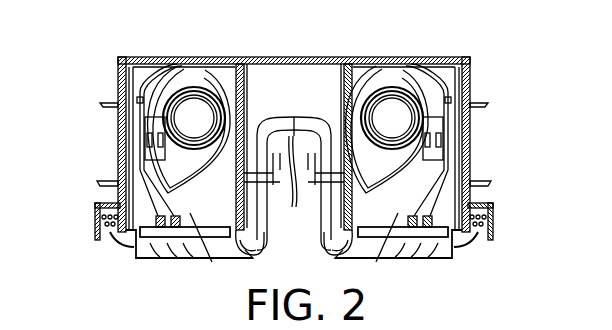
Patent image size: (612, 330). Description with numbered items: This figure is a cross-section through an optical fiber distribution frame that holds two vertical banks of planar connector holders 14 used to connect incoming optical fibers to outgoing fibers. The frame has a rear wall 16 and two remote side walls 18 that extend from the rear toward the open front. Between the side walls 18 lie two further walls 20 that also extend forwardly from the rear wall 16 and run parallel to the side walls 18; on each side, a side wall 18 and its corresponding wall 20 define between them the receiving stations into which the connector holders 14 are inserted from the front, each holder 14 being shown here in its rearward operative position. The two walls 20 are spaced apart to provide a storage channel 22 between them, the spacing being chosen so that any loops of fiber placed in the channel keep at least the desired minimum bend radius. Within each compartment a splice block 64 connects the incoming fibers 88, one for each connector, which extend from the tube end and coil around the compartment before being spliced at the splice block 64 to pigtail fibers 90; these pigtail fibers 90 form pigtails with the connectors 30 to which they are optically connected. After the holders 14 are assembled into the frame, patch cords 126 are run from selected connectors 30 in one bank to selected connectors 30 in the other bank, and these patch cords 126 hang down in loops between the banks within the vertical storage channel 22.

The connector holder 14 is at (128, 266).
The rear wall 16 is at (285, 57).
The side wall 18 is at (117, 70).
The wall 20 is at (246, 92).
The storage channel 22 is at (303, 101).
The connector 30 is at (209, 244).
The splice block 64 is at (148, 130).
The fiber 88 is at (145, 180).
The pigtail fiber 90 is at (158, 216).
The patch cord 126 is at (301, 186).